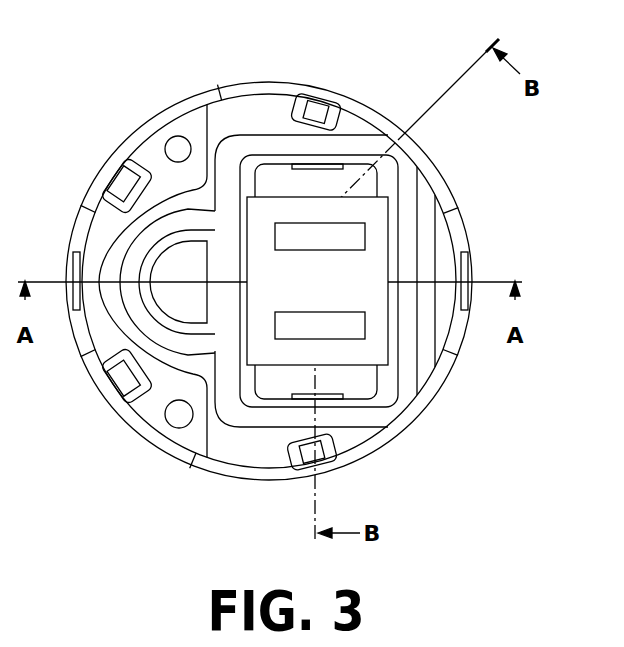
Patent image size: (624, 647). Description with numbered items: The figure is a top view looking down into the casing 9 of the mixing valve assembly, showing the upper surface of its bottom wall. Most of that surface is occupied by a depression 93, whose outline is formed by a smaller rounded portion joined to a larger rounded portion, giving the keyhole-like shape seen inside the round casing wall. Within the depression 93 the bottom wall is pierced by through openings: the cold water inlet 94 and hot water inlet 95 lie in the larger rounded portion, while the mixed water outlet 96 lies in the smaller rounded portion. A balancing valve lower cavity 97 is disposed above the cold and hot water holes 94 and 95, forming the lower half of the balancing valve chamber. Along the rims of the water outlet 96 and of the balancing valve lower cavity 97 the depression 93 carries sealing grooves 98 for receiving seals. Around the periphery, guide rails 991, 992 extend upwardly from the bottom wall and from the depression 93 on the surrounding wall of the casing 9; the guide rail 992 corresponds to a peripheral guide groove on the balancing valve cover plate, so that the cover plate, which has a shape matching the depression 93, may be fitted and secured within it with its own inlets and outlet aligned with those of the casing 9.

The casing 9 is at (470, 195).
The depression 93 is at (245, 120).
The cold water inlet 94 is at (345, 328).
The hot water inlet 95 is at (348, 238).
The mixed water outlet 96 is at (172, 273).
The balancing valve lower cavity 97 is at (367, 295).
The sealing grooves 98 is at (227, 193).
The guide rail 991 is at (147, 150).
The guide rail 992 is at (284, 97).